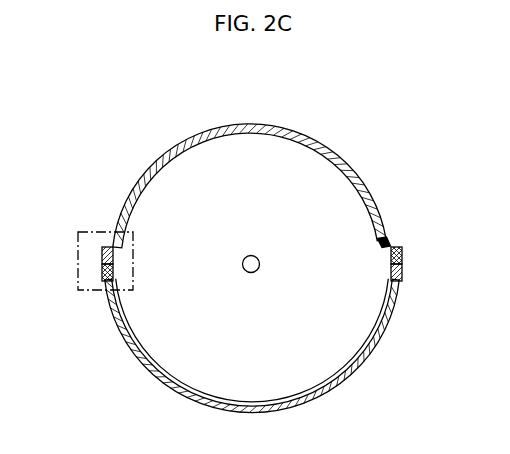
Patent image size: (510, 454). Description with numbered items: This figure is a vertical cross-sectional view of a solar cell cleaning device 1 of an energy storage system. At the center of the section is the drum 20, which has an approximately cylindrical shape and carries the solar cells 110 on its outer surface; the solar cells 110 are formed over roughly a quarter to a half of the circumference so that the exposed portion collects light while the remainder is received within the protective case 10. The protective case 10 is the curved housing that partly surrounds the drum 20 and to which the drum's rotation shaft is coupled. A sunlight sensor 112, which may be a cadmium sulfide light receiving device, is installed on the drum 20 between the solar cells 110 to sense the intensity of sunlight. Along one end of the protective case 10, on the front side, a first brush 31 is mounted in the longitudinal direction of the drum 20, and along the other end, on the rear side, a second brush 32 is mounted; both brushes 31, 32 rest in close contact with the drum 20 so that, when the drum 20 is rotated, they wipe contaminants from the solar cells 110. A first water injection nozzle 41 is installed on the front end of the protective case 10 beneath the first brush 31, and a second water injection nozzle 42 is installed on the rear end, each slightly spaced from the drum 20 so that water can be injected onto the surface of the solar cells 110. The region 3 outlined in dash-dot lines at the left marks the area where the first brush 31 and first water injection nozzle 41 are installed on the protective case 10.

The solar cell cleaning device 1 is at (395, 135).
The hinge portion 3 is at (93, 232).
The protective case 10 is at (358, 368).
The drum 20 is at (225, 158).
The first brush 31 is at (103, 251).
The second brush 32 is at (405, 270).
The first water injection nozzle 41 is at (105, 270).
The second water injection nozzle 42 is at (403, 249).
The solar cells 110 is at (303, 133).
The sunlight sensor 112 is at (390, 238).